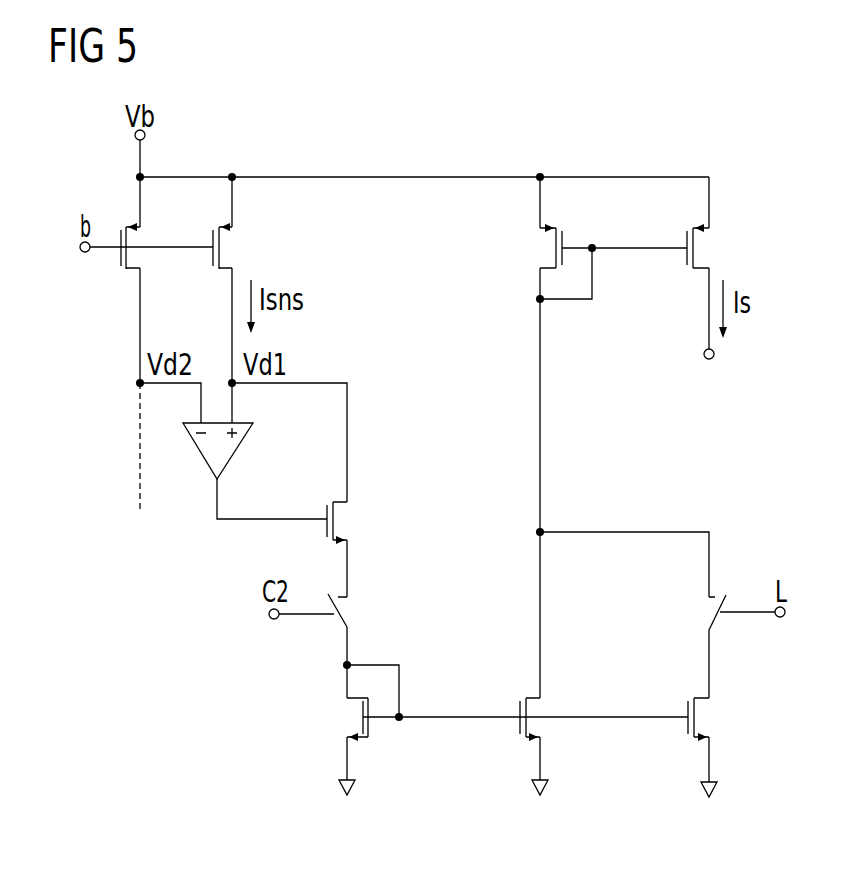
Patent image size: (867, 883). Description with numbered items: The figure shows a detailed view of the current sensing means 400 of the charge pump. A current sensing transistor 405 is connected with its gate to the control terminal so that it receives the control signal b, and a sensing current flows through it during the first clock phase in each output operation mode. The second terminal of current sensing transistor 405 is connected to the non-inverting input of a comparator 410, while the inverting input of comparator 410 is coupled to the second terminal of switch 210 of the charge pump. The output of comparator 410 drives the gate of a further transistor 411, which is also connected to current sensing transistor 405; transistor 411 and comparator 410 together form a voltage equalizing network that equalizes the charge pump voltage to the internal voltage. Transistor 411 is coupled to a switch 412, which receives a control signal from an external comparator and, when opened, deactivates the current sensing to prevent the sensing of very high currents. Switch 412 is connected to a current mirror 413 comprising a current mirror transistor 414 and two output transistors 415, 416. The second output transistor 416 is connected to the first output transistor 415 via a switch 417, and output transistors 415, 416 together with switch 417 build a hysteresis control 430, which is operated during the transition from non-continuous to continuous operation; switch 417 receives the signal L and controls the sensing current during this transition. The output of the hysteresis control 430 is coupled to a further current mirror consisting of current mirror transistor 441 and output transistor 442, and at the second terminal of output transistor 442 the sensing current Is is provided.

The current sensing means 400 is at (445, 145).
The switch 210 is at (120, 263).
The current sensing transistor 405 is at (222, 251).
The comparator 410 is at (235, 450).
The transistor 411 is at (325, 531).
The switch 412 is at (346, 620).
The current mirror 413 is at (462, 775).
The current mirror transistor 414 is at (370, 727).
The first output transistor 415 is at (517, 706).
The second output transistor 416 is at (685, 708).
The switch 417 is at (715, 618).
The hysteresis control 430 is at (700, 490).
The current mirror transistor 441 is at (568, 240).
The output transistor 442 is at (683, 255).